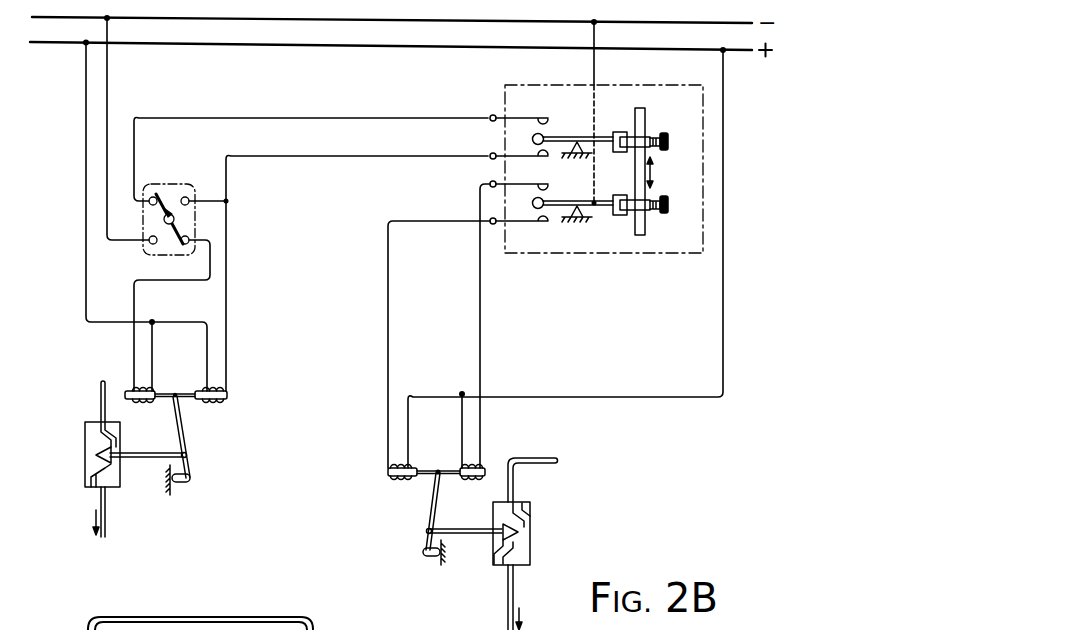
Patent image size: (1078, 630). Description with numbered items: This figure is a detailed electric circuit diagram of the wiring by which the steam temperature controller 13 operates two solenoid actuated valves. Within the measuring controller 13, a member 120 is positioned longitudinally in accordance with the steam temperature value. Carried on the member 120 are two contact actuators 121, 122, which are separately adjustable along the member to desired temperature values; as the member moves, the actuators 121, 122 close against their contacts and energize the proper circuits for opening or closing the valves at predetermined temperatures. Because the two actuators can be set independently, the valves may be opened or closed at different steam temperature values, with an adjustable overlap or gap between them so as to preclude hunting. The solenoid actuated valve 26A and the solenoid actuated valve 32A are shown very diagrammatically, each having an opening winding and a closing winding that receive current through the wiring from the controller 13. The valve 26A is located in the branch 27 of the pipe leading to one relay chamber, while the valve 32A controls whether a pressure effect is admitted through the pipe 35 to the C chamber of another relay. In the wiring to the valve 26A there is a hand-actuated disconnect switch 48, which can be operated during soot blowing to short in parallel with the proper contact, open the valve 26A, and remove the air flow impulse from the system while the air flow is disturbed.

The steam temperature controller 13 is at (698, 178).
The member 120 is at (645, 122).
The contact actuator 121 is at (621, 131).
The contact actuator 122 is at (621, 215).
The disconnect switch 48 is at (169, 183).
The branch 27 is at (100, 385).
The solenoid actuated valve 26A is at (85, 467).
The pipe 35 is at (542, 448).
The solenoid actuated valve 32A is at (532, 540).